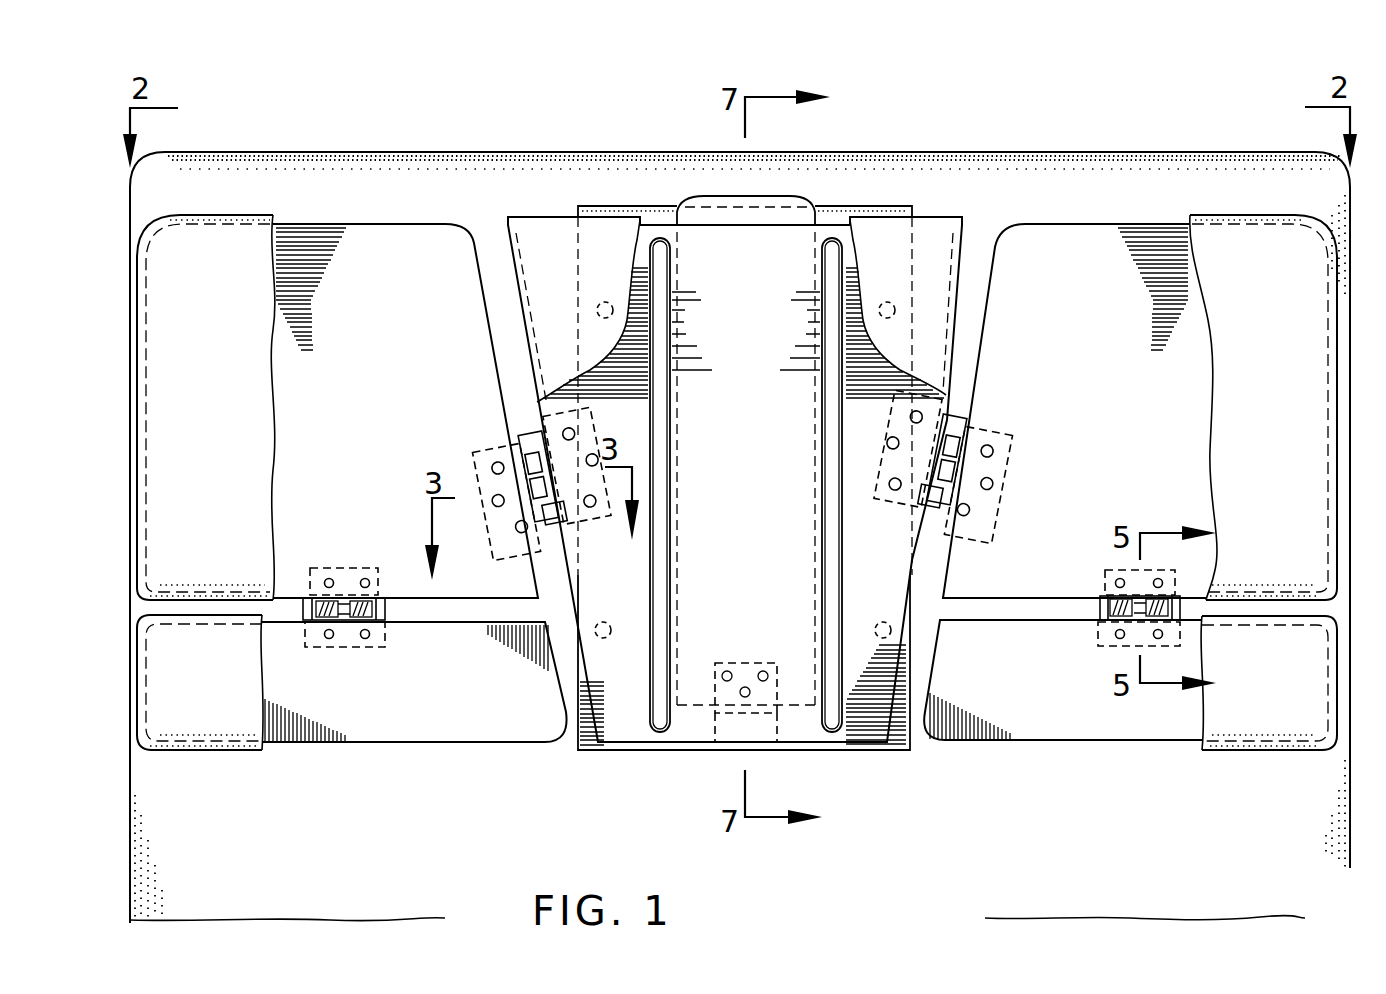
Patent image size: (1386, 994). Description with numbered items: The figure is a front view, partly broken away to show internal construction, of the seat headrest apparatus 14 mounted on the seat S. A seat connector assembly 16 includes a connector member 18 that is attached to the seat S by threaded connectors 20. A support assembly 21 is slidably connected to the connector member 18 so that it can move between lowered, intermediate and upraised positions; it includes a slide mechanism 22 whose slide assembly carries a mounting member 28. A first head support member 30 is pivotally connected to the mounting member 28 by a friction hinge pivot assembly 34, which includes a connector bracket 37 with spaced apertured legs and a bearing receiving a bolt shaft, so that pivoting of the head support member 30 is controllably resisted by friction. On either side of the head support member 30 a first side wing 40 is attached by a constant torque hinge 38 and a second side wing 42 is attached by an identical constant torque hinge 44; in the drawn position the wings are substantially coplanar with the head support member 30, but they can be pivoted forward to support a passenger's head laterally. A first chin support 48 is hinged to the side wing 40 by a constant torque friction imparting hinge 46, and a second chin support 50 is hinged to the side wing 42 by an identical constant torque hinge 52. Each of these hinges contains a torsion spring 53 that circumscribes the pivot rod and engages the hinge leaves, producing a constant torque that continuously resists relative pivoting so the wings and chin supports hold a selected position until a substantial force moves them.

The seat headrest apparatus 14 is at (500, 183).
The seat S is at (1117, 178).
The seat connector assembly 16 is at (904, 201).
The connector member 18 is at (897, 740).
The threaded connectors 20 is at (597, 308).
The support assembly 21 is at (694, 205).
The slide mechanism 22 is at (736, 216).
The mounting member 28 is at (788, 203).
The first head support member 30 is at (630, 700).
The friction hinge pivot assembly 34 is at (752, 715).
The connector bracket 37 is at (735, 662).
The constant torque hinge 38 is at (524, 428).
The first side wing 40 is at (331, 285).
The second side wing 42 is at (1068, 277).
The constant torque hinge 44 is at (946, 420).
The constant torque friction imparting hinge 46 is at (334, 566).
The first chin support 48 is at (388, 705).
The second chin support 50 is at (1040, 700).
The constant torque hinge 52 is at (1103, 604).
The torsion spring 53 is at (357, 612).